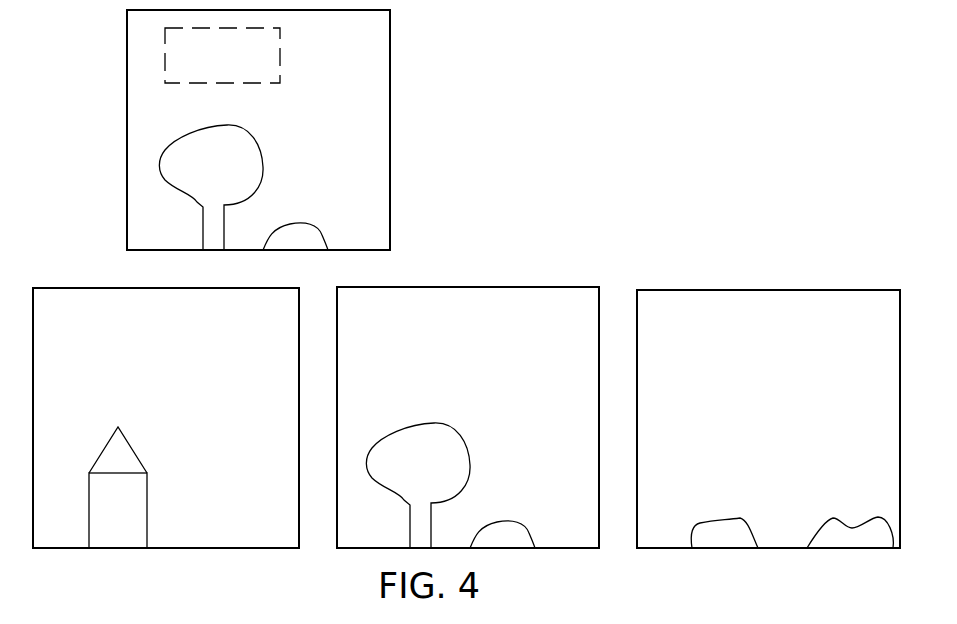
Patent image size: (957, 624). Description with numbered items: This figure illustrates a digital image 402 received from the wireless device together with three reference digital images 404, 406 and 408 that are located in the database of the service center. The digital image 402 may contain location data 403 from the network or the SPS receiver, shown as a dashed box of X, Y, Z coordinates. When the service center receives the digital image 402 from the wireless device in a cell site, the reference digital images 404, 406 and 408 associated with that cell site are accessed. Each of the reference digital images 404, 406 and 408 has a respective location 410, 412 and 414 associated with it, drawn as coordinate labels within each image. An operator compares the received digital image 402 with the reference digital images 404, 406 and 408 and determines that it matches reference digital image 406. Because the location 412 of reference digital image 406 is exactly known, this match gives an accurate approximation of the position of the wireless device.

The digital image 402 is at (338, 59).
The location data 403 is at (240, 85).
The reference digital image 404 is at (205, 338).
The reference digital image 406 is at (487, 338).
The reference digital image 408 is at (788, 348).
The location 410 is at (128, 387).
The location 412 is at (430, 390).
The location 414 is at (702, 393).